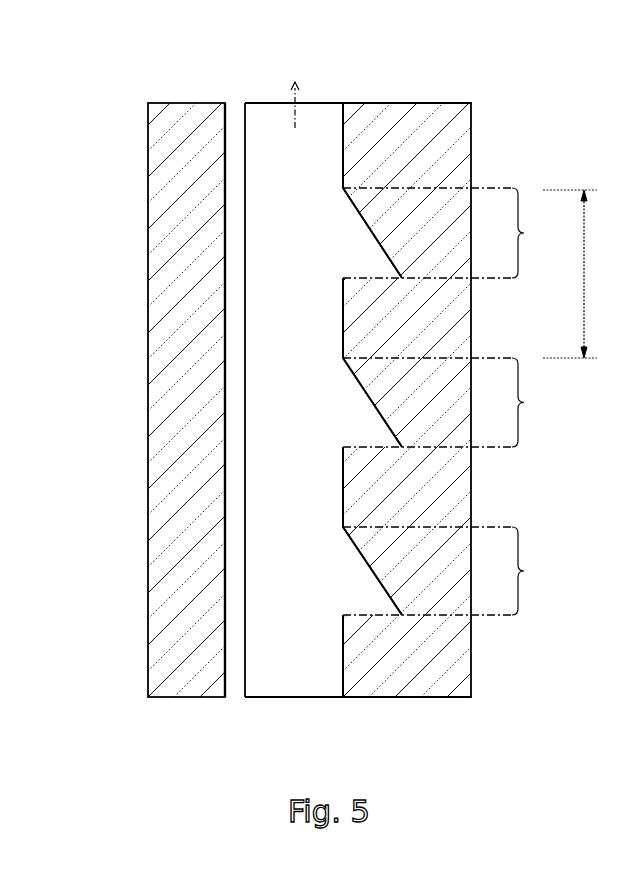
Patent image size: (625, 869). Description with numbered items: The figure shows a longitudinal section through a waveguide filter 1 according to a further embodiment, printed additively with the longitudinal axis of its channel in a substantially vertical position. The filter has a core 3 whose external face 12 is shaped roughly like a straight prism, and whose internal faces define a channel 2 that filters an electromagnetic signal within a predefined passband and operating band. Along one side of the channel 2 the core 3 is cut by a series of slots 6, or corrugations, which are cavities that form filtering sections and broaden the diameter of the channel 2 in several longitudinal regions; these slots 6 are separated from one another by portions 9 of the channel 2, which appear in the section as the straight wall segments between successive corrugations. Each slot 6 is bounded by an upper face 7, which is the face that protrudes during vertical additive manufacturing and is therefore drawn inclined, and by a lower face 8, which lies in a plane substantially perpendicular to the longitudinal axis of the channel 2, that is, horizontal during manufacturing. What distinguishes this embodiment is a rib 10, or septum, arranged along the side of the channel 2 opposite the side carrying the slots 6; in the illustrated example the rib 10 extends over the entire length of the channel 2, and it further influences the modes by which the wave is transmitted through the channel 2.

The waveguide filter 1 is at (88, 683).
The channel 2 is at (316, 122).
The core 3 is at (394, 118).
The slot 6 is at (530, 401).
The upper face 7 is at (358, 212).
The lower face 8 is at (360, 277).
The portion 9 is at (340, 172).
The rib 10 is at (228, 150).
The external face 12 is at (165, 408).